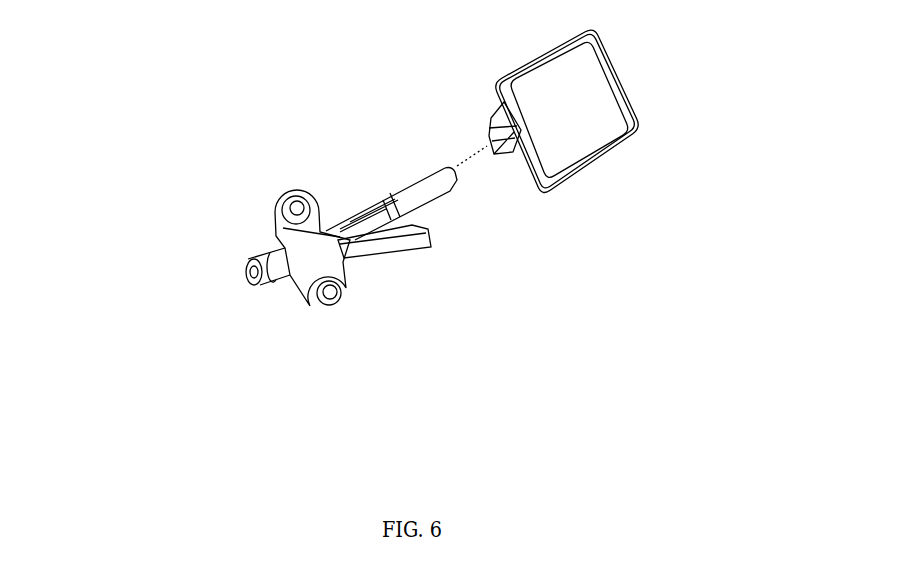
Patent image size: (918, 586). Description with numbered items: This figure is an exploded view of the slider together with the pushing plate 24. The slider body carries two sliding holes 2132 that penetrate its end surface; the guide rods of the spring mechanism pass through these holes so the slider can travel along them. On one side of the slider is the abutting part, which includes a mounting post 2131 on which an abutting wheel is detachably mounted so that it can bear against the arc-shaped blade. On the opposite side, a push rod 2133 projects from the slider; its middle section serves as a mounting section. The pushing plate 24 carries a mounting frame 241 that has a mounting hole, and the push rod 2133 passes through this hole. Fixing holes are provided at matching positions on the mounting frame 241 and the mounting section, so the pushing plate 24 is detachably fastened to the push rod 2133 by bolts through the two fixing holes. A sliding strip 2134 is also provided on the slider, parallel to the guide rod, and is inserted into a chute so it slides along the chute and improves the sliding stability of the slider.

The pushing plate 24 is at (604, 163).
The mounting frame 241 is at (485, 125).
The mounting post 2131 is at (246, 268).
The sliding hole 2132 is at (338, 300).
The push rod 2133 is at (448, 188).
The sliding strip 2134 is at (411, 255).